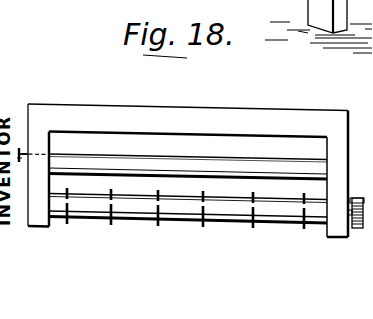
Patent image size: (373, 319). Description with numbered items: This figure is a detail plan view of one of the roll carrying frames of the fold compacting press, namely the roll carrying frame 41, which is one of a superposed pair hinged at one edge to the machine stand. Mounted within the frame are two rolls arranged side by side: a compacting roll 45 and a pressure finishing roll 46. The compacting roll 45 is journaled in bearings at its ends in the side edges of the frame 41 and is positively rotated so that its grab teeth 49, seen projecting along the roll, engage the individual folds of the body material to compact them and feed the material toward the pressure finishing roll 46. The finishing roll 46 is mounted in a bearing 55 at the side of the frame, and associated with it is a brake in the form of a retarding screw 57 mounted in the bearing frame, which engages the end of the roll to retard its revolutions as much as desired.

The roll carrying frame 41 is at (106, 115).
The pressure finishing roll 46 is at (186, 168).
The compacting roll 45 is at (182, 222).
The grab teeth 49 is at (303, 230).
The bearing 55 is at (360, 190).
The retarding screw 57 is at (21, 146).